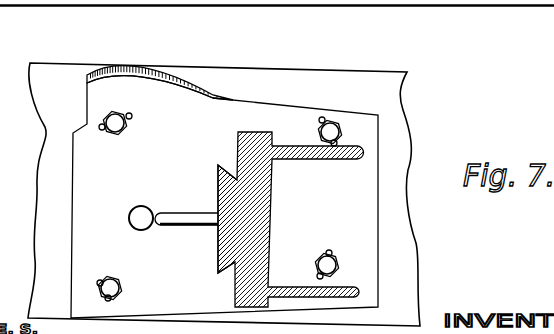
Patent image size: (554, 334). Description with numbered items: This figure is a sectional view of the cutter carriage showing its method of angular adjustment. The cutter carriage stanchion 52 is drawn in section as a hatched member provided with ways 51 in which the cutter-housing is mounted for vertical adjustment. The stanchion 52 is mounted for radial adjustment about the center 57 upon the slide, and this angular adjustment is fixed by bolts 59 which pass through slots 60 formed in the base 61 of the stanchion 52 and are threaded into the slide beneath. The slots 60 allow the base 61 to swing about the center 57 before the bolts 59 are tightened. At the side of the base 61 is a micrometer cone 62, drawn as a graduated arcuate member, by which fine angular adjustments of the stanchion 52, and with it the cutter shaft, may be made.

The ways 51 is at (221, 172).
The cutter carriage stanchion 52 is at (268, 197).
The center 57 is at (145, 214).
The bolts 59 is at (113, 130).
The slots 60 is at (319, 121).
The base 61 is at (224, 197).
The micrometer cone 62 is at (180, 70).